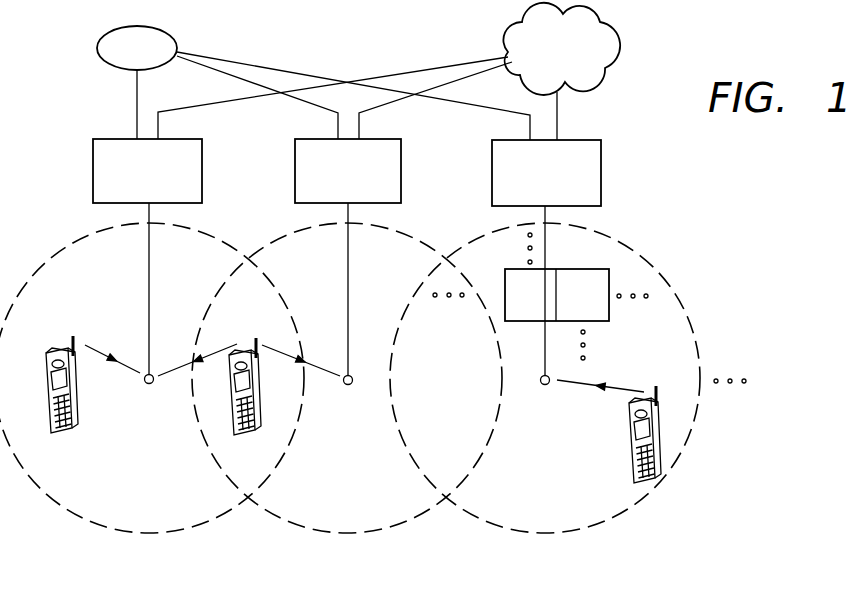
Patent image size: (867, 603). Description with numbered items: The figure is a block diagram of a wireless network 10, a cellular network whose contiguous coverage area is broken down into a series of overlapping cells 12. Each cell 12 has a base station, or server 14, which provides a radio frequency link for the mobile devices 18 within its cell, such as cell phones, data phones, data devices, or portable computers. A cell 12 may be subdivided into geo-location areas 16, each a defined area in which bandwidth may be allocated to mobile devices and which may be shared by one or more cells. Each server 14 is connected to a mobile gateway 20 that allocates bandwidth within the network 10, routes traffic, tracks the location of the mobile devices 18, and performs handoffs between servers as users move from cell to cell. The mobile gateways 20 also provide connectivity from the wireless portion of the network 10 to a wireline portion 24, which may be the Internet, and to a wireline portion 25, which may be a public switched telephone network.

The wireless network 10 is at (700, 199).
The cell 12 is at (148, 536).
The server 14 is at (149, 385).
The geo-location area 16 is at (609, 305).
The mobile device 18 is at (78, 413).
The mobile gateway 20 is at (93, 170).
The wireline portion 24 is at (618, 40).
The wireline portion 25 is at (97, 50).